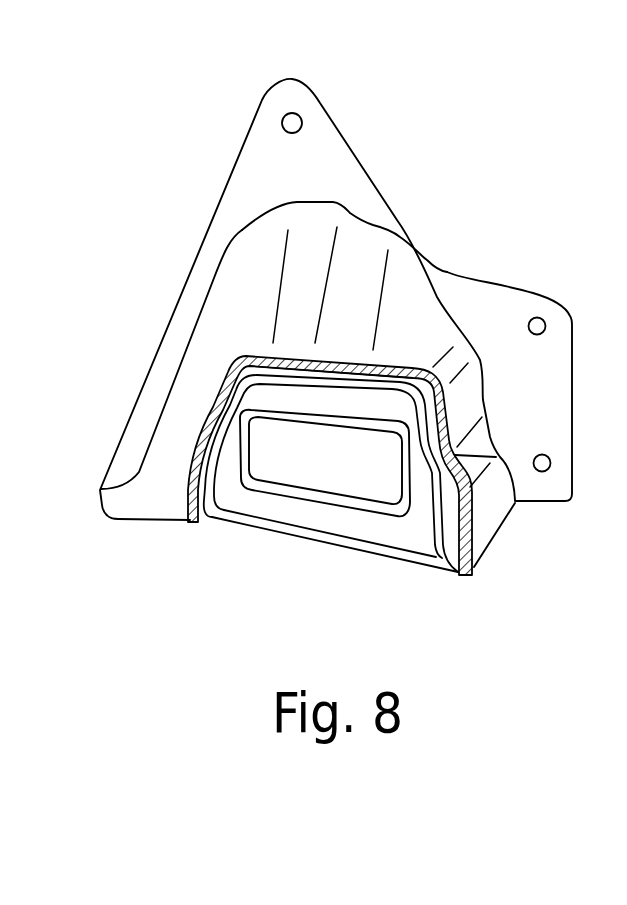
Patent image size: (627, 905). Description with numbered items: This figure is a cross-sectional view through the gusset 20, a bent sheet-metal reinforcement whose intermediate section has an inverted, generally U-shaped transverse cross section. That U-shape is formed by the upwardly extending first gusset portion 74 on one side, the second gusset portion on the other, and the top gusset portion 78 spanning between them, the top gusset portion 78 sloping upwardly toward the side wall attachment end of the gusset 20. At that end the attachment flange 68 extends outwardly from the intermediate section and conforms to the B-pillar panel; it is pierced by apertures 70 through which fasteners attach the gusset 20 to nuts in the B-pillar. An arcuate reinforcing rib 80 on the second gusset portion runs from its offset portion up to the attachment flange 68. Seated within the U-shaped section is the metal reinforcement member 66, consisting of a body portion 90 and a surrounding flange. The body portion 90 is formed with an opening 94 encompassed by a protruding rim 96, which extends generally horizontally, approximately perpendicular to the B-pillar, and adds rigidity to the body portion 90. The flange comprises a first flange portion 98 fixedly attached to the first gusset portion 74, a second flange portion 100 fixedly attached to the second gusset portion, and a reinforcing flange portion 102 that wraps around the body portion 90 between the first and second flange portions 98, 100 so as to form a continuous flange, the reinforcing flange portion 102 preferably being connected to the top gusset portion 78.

The gusset 20 is at (482, 156).
The reinforcement member 66 is at (412, 543).
The attachment flange 68 is at (453, 288).
The apertures 70 is at (301, 125).
The first gusset portion 74 is at (163, 450).
The top gusset portion 78 is at (330, 360).
The reinforcing rib 80 is at (515, 503).
The body portion 90 is at (250, 506).
The opening 94 is at (331, 495).
The protruding rim 96 is at (260, 487).
The first flange portion 98 is at (221, 503).
The second flange portion 100 is at (478, 570).
The reinforcing flange portion 102 is at (343, 374).